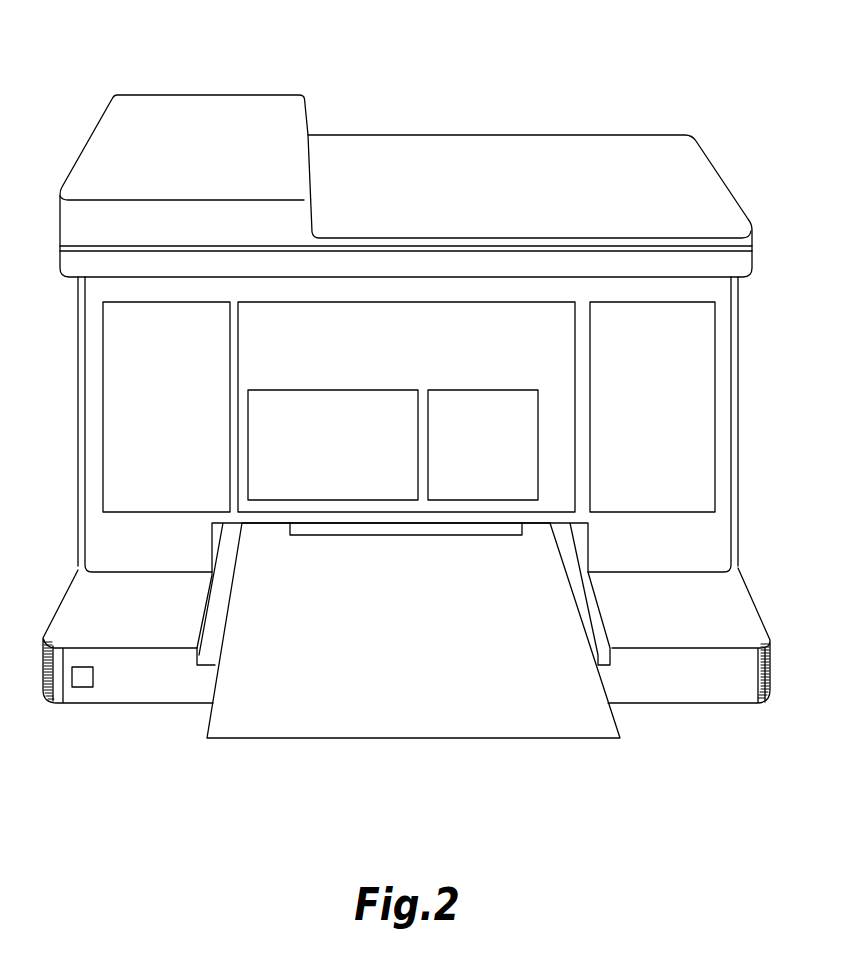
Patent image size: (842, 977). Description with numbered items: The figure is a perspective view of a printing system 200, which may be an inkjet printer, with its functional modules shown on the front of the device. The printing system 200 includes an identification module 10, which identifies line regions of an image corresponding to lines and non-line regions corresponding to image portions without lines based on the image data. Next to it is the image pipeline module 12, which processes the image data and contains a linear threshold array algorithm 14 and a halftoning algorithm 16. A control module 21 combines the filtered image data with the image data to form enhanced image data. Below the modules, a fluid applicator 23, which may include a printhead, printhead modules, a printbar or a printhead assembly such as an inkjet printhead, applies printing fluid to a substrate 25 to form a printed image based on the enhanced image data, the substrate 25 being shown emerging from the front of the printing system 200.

The printing system 200 is at (379, 38).
The identification module 10 is at (183, 452).
The image pipeline module 12 is at (407, 365).
The linear threshold array algorithm 14 is at (357, 490).
The halftoning algorithm 16 is at (467, 490).
The control module 21 is at (633, 452).
The fluid applicator 23 is at (412, 530).
The substrate 25 is at (363, 717).